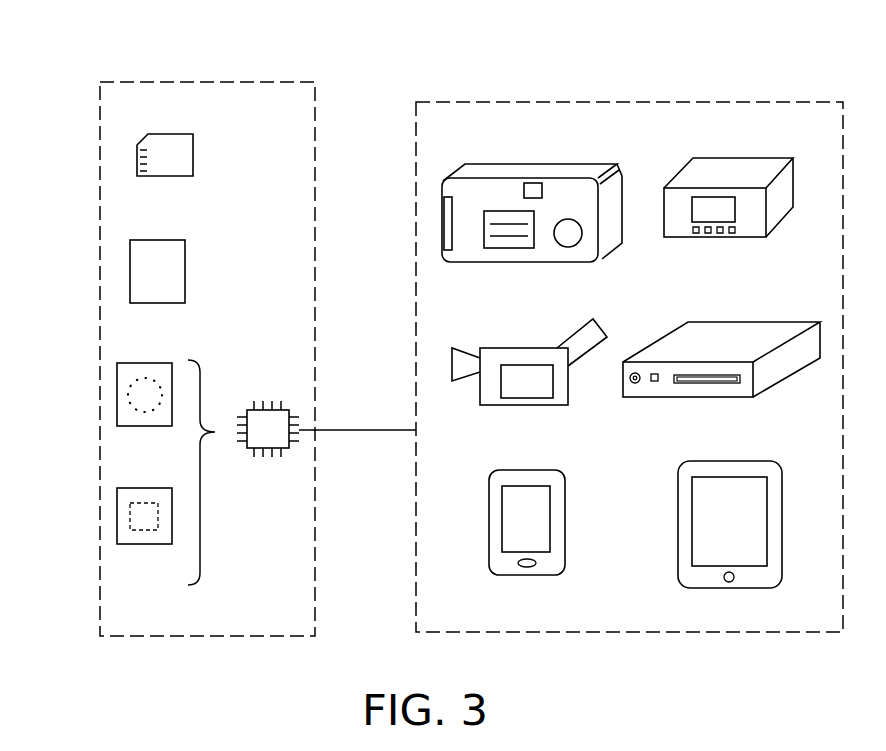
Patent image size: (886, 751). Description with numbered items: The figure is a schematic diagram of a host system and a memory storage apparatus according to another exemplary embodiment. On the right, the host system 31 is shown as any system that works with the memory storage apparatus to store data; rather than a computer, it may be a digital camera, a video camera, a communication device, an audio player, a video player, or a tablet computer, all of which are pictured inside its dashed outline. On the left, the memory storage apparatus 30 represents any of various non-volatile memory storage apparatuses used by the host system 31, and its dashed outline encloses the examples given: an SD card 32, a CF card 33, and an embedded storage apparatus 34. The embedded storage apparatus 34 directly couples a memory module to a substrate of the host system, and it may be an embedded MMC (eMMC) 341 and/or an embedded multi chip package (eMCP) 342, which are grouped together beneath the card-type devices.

The memory storage apparatus 30 is at (197, 80).
The host system 31 is at (563, 100).
The SD card 32 is at (137, 162).
The CF card 33 is at (130, 273).
The embedded storage apparatus 34 is at (268, 408).
The embedded MMC (eMMC) 341 is at (117, 395).
The embedded multi chip package (eMCP) 342 is at (117, 520).